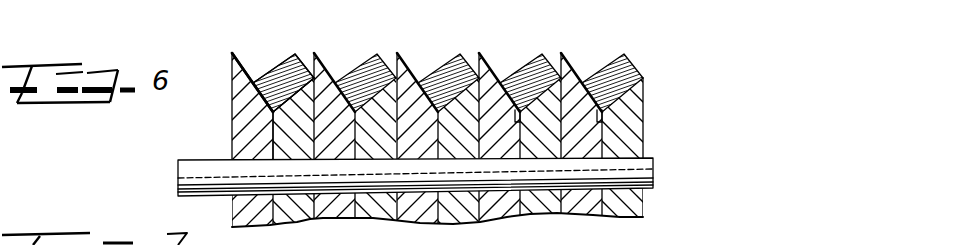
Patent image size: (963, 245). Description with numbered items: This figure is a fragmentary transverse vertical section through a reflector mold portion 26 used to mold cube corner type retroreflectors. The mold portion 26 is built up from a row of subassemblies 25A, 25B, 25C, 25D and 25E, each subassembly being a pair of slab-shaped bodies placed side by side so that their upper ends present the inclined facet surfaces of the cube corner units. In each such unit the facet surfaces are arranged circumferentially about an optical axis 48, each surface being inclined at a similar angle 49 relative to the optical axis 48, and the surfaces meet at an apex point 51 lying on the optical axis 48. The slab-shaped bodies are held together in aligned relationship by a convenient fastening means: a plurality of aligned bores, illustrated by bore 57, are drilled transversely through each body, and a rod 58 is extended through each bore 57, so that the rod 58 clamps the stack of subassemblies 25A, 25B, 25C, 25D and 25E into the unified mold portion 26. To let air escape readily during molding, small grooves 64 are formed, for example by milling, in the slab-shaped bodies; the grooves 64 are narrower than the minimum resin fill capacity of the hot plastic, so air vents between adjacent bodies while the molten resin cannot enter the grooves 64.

The subassembly 25A is at (272, 120).
The subassembly 25B is at (354, 120).
The subassembly 25C is at (437, 120).
The subassembly 25D is at (519, 120).
The subassembly 25E is at (601, 120).
The reflector mold portion 26 is at (650, 97).
The optical axis 48 is at (271, 112).
The angle 49 is at (269, 57).
The apex point 51 is at (312, 80).
The bore 57 is at (641, 156).
The rod 58 is at (640, 168).
The groove 64 is at (518, 110).